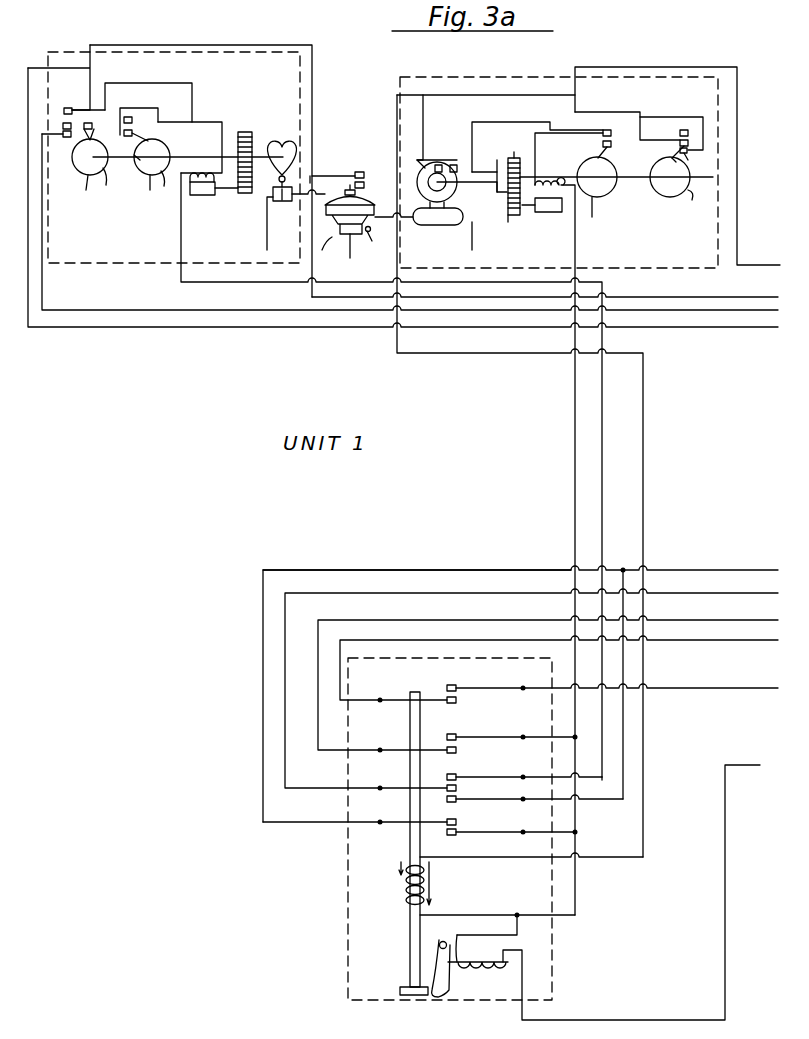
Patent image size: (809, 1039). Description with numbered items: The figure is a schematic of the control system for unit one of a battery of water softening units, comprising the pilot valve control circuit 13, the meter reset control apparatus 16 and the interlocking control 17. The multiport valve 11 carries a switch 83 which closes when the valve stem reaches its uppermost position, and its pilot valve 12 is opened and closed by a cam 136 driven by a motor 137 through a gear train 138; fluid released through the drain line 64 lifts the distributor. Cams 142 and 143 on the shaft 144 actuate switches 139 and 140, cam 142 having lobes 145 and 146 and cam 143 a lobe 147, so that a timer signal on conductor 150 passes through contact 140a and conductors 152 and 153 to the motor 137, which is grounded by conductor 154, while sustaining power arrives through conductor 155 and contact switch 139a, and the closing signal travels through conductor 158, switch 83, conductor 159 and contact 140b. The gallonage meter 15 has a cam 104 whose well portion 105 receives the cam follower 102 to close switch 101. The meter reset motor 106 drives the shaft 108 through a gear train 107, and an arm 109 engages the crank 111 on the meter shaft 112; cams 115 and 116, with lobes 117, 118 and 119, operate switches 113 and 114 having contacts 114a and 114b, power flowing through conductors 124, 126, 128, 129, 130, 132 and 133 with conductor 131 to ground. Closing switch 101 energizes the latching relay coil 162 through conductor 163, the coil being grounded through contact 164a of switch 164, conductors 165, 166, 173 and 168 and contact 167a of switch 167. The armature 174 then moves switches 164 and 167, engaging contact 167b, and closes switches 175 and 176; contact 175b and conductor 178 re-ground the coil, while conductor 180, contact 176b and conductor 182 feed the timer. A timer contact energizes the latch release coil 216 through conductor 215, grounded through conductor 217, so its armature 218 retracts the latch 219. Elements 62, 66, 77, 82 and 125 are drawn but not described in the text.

The multiport valve 11 is at (356, 248).
The pilot valve 12 is at (284, 201).
The control circuit 13 is at (183, 46).
The gallonage meter 15 is at (446, 159).
The meter reset control apparatus 16 is at (528, 74).
The interlocking control 17 is at (346, 914).
The valve 62 is at (350, 205).
The drain line 64 is at (332, 171).
The lever 66 is at (378, 237).
The conductor 77 is at (575, 765).
The valve connection 82 is at (322, 250).
The switch 83 is at (360, 171).
The switch 101 is at (472, 190).
The cam follower 102 is at (420, 163).
The cam 104 is at (420, 195).
The well portion 105 is at (433, 168).
The meter reset motor 106 is at (560, 213).
The gear train 107 is at (508, 218).
The shaft 108 is at (516, 158).
The arm 109 is at (512, 152).
The crank 111 is at (490, 172).
The meter shaft 112 is at (500, 194).
The switch 113 is at (591, 144).
The switch 114 is at (660, 140).
The contact 114a is at (702, 156).
The contact 114b is at (670, 137).
The cam 115 is at (610, 195).
The cam 116 is at (666, 200).
The lobe 117 is at (616, 168).
The lobe 118 is at (593, 216).
The lobe 119 is at (702, 201).
The conductor 124 is at (739, 262).
The conductor 125 is at (481, 121).
The conductor 126 is at (424, 140).
The conductor 128 is at (491, 95).
The conductor 129 is at (581, 111).
The conductor 130 is at (548, 180).
The conductor 131 is at (577, 258).
The conductor 132 is at (569, 152).
The conductor 133 is at (654, 113).
The cam 136 is at (280, 141).
The motor 137 is at (200, 195).
The gear train 138 is at (261, 194).
The switch 139 is at (144, 119).
The contact switch 139a is at (127, 150).
The switch 140 is at (93, 123).
The contact 140a is at (66, 140).
The contact 140b is at (68, 108).
The cam 142 is at (173, 187).
The cam 143 is at (113, 186).
The shaft 144 is at (180, 157).
The lobe 145 is at (150, 134).
The lobe 146 is at (150, 190).
The lobe 147 is at (90, 172).
The conductor 150 is at (743, 313).
The conductor 152 is at (134, 83).
The conductor 153 is at (212, 118).
The conductor 154 is at (182, 247).
The conductor 155 is at (743, 330).
The conductor 158 is at (743, 298).
The conductor 159 is at (314, 112).
The latching relay coil 162 is at (406, 866).
The conductor 163 is at (644, 370).
The switch 164 is at (379, 821).
The contact 164a is at (456, 829).
The conductor 165 is at (262, 628).
The conductor 166 is at (604, 800).
The switch 167 is at (379, 787).
The contact 167a is at (463, 797).
The contact 167b is at (456, 775).
The conductor 168 is at (736, 592).
The conductor 173 is at (736, 569).
The armature 174 is at (421, 850).
The switch 175 is at (379, 748).
The contact 175b is at (456, 735).
The switch 176 is at (379, 698).
The contact 176b is at (456, 686).
The conductor 178 is at (736, 618).
The conductor 180 is at (736, 639).
The conductor 182 is at (736, 687).
The conductor 215 is at (739, 765).
The latch release coil 216 is at (488, 968).
The conductor 217 is at (518, 930).
The armature 218 is at (457, 935).
The latch 219 is at (449, 986).